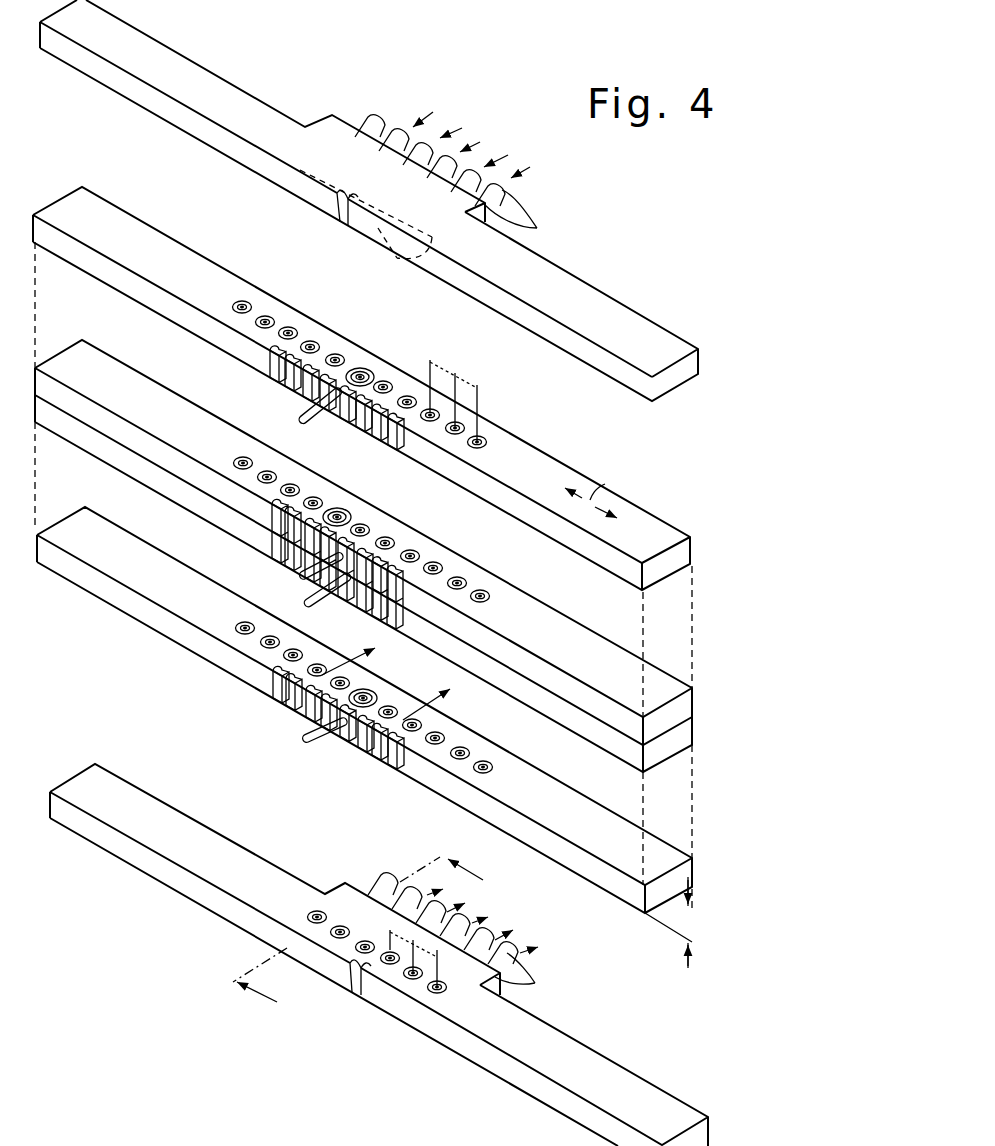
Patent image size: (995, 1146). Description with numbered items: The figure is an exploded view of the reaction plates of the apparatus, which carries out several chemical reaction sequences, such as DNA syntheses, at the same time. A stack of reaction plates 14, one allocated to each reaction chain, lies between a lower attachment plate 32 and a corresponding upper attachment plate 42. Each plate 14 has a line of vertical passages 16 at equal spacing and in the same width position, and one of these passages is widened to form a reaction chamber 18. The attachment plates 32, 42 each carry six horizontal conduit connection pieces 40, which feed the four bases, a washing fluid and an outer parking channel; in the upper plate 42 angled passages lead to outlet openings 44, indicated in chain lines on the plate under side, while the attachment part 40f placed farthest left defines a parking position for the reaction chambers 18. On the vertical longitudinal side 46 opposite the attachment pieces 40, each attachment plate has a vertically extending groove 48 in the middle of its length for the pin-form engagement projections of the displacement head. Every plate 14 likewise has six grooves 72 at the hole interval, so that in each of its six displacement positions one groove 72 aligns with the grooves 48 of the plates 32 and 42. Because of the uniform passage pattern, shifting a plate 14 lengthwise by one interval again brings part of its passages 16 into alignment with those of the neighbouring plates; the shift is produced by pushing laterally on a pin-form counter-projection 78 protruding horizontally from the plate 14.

The reaction plate 14 is at (647, 522).
The passages 16 is at (290, 330).
The reaction chamber 18 is at (360, 375).
The lower attachment plate 32 is at (610, 1065).
The conduit connection piece 40 is at (530, 596).
The attachment part 40f is at (362, 118).
The upper attachment plate 42 is at (608, 313).
The outlet openings 44 is at (412, 247).
The vertical longitudinal side 46 is at (575, 349).
The groove 48 is at (338, 207).
The grooves 72 is at (397, 450).
The counter-projection 78 is at (302, 421).